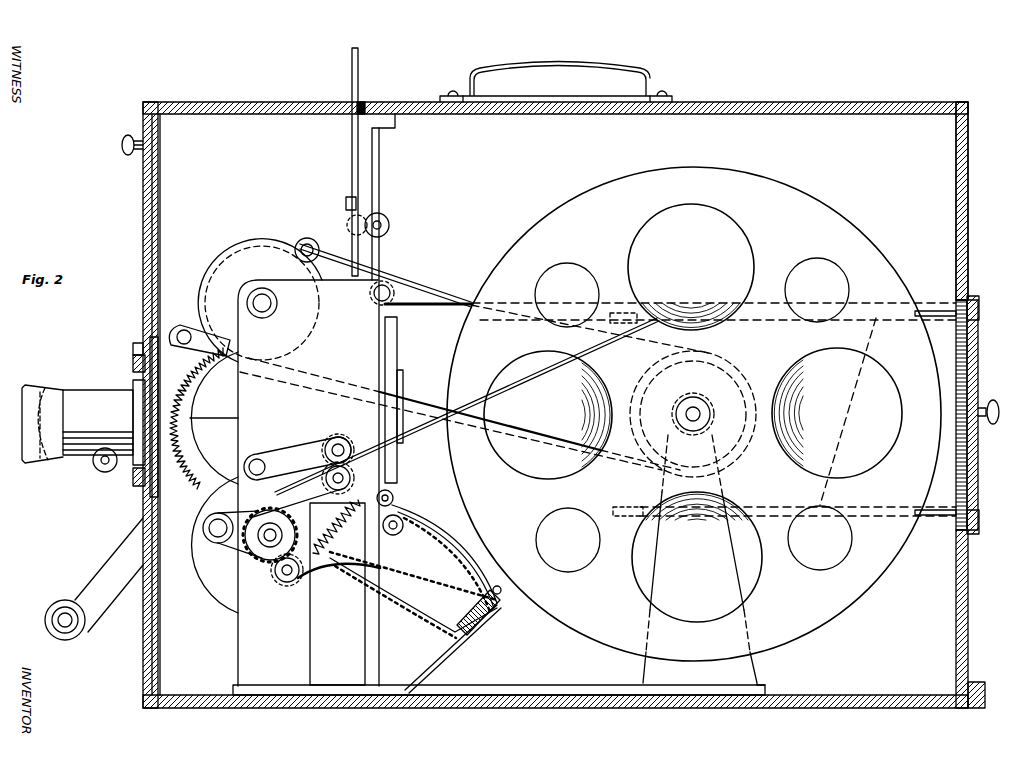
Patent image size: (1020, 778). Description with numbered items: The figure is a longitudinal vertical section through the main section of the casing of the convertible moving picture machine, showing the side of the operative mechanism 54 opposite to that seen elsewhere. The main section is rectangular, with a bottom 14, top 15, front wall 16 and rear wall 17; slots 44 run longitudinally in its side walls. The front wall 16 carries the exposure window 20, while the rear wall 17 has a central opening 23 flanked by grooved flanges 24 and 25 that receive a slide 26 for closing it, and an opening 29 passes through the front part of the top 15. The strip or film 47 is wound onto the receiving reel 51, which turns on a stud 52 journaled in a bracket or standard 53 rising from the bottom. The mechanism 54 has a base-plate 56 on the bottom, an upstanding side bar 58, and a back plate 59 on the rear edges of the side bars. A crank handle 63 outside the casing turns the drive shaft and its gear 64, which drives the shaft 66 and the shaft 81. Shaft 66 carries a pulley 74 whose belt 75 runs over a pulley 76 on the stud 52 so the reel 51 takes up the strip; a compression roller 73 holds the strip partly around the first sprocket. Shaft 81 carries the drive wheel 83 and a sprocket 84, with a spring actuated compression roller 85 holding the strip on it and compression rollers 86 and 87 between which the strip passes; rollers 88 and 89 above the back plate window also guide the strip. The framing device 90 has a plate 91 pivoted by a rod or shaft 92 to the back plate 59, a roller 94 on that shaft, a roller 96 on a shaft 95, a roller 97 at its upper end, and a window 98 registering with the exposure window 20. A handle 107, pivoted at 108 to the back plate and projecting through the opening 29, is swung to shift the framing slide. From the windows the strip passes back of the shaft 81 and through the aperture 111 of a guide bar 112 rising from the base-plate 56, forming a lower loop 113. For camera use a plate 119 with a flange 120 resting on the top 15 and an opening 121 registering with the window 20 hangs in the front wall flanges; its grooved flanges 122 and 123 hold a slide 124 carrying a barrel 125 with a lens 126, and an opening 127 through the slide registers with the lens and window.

The bottom 14 is at (905, 704).
The top 15 is at (780, 102).
The front wall 16 is at (160, 178).
The rear wall 17 is at (956, 145).
The exposure window 20 is at (185, 404).
The opening 23 is at (956, 432).
The grooved flange 24 is at (976, 534).
The grooved flange 25 is at (972, 296).
The slide 26 is at (956, 478).
The opening 29 is at (364, 108).
The slots 44 is at (835, 404).
The transparent strip or film, or opaque strip 47 is at (430, 620).
The receiving reel 51 is at (812, 216).
The stud 52 is at (693, 424).
The bracket or standard 53 is at (736, 666).
The mechanism 54 is at (218, 420).
The base-plate 56 is at (330, 695).
The side bar 58 is at (250, 666).
The back plate 59 is at (380, 146).
The crank handle 63 is at (135, 578).
The gear 64 is at (190, 472).
The shaft 66 is at (277, 304).
The compression roller 73 is at (310, 240).
The pulley 74 is at (258, 242).
The belt 75 is at (432, 286).
The pulley 76 is at (742, 372).
The shaft 81 is at (270, 545).
The drive wheel 83 is at (210, 576).
The sprocket 84 is at (297, 526).
The compression roller 85 is at (288, 584).
The compression roller 86 is at (328, 481).
The compression roller 87 is at (334, 440).
The compression roller 88 is at (352, 232).
The compression roller 89 is at (385, 222).
The framing device 90 is at (398, 322).
The plate 91 is at (395, 340).
The rod or shaft 92 is at (394, 497).
The roller 94 is at (400, 505).
The shaft 95 is at (393, 536).
The roller 96 is at (401, 532).
The roller 97 is at (390, 282).
The window 98 is at (445, 560).
The handle 107 is at (350, 70).
The pivot 108 is at (346, 203).
The aperture 111 is at (500, 605).
The guide bar 112 is at (452, 668).
The lower loop 113 is at (470, 566).
The plate 119 is at (150, 205).
The flange 120 is at (165, 102).
The opening 121 is at (156, 392).
The grooved flange 122 is at (137, 484).
The grooved flange 123 is at (140, 350).
The slide 124 is at (134, 363).
The barrel 125 is at (82, 388).
The lens 126 is at (46, 466).
The opening 127 is at (134, 420).